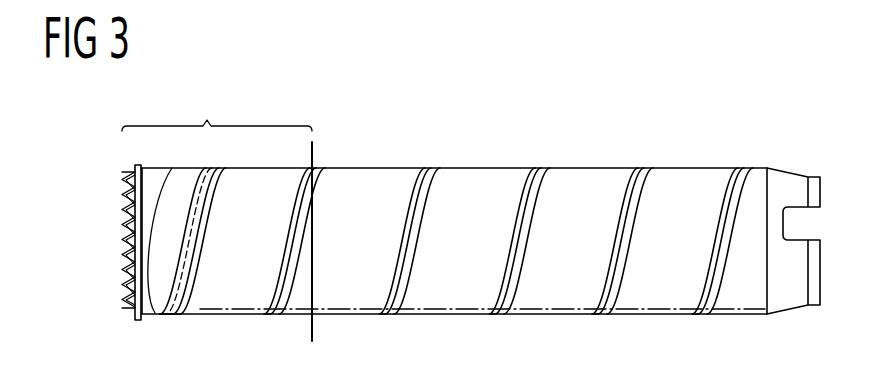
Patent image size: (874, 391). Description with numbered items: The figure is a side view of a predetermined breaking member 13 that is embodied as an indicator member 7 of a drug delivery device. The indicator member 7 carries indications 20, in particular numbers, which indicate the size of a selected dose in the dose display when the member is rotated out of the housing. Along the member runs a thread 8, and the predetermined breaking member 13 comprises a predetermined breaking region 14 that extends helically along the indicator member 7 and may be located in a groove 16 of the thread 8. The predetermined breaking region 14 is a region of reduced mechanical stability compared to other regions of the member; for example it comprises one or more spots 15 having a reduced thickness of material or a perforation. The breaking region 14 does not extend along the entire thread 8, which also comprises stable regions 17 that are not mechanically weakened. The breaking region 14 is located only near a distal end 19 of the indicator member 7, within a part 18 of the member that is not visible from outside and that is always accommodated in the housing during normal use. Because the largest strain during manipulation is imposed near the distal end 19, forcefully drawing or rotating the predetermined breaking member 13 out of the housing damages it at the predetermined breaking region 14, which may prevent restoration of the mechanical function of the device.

The indicator member 7 is at (700, 183).
The thread 8 is at (622, 272).
The predetermined breaking member 13 is at (582, 180).
The predetermined breaking region 14 is at (193, 278).
The spots 15 is at (205, 194).
The groove 16 is at (208, 199).
The stable regions 17 is at (448, 300).
The part 18 is at (217, 213).
The distal end 19 is at (108, 222).
The indications 20 is at (243, 258).